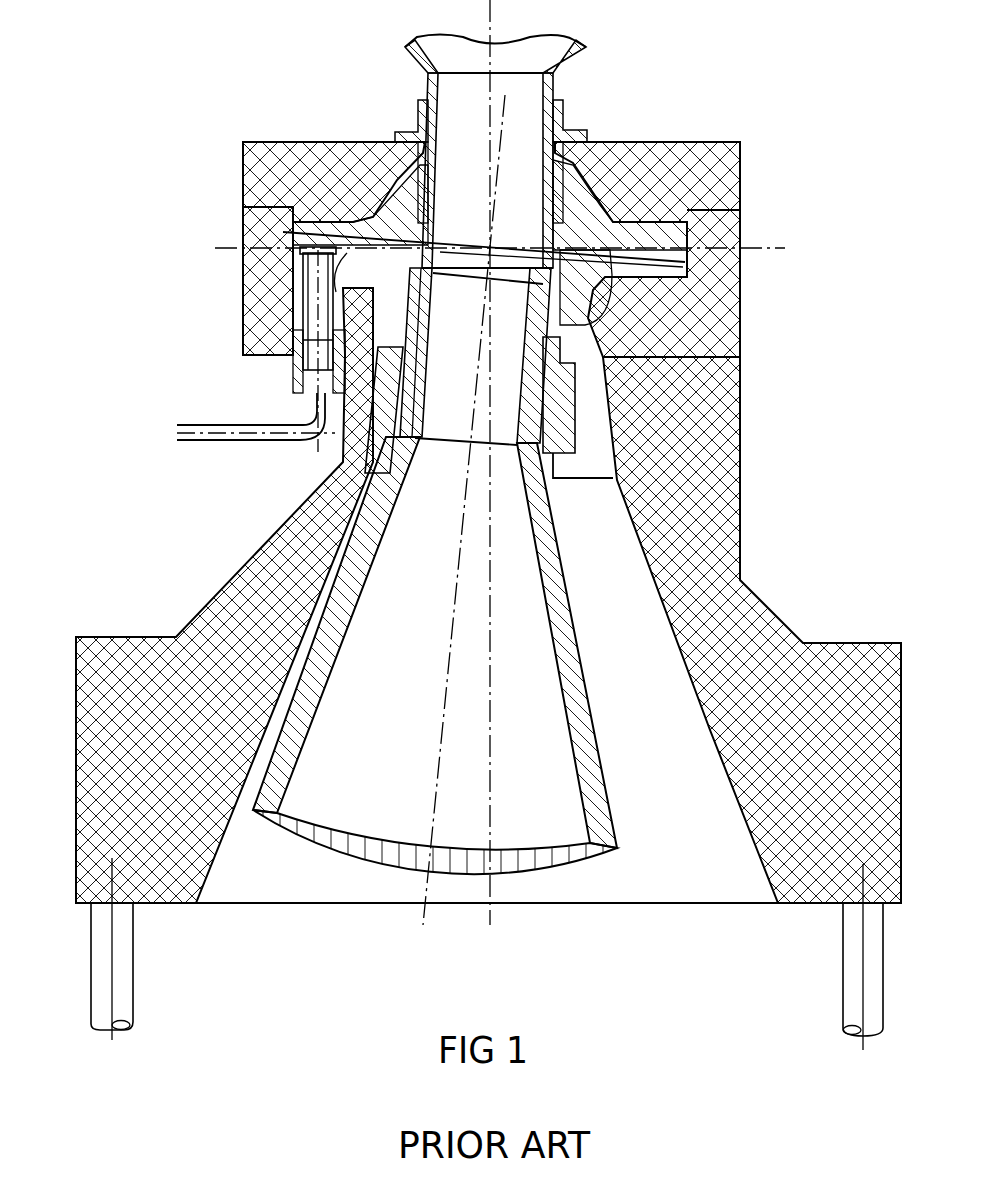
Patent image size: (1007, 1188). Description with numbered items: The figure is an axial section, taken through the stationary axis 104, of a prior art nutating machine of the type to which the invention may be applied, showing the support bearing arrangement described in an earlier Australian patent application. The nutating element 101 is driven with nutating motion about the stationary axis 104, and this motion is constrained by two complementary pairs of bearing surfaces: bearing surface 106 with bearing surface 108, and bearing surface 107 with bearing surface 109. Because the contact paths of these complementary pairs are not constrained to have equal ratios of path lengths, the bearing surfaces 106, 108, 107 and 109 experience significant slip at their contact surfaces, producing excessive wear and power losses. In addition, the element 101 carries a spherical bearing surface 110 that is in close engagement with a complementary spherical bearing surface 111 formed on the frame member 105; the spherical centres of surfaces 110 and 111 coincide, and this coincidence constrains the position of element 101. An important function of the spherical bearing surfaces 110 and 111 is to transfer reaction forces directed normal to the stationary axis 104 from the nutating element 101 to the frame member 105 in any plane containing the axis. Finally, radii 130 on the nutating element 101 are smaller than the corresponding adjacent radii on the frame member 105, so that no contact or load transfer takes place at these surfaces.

The nutating element 101 is at (573, 578).
The stationary axis 104 is at (488, 672).
The frame member 105 is at (743, 192).
The bearing surface 106 is at (347, 253).
The bearing surface 107 is at (658, 250).
The bearing surface 108 is at (313, 340).
The bearing surface 109 is at (650, 223).
The spherical bearing surface 110 is at (440, 193).
The spherical bearing surface 111 is at (393, 187).
The radii 130 is at (587, 322).